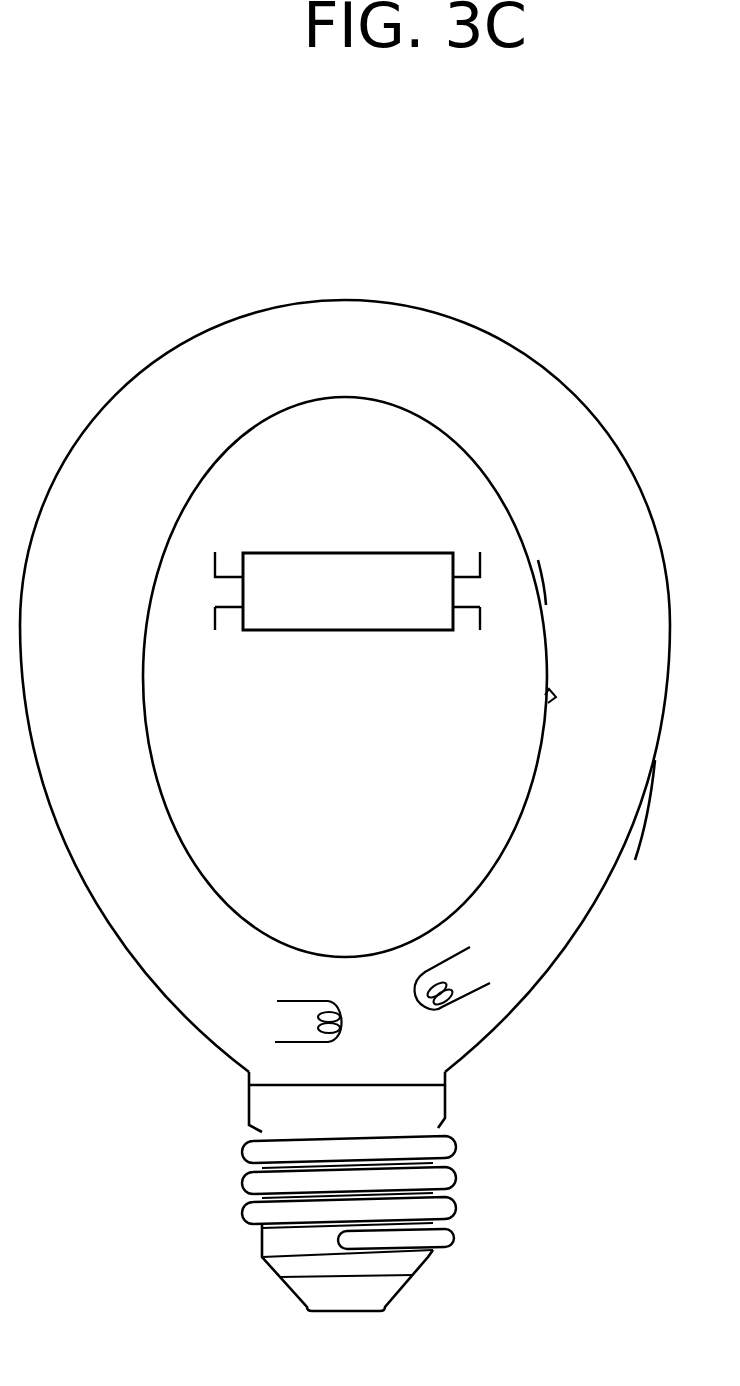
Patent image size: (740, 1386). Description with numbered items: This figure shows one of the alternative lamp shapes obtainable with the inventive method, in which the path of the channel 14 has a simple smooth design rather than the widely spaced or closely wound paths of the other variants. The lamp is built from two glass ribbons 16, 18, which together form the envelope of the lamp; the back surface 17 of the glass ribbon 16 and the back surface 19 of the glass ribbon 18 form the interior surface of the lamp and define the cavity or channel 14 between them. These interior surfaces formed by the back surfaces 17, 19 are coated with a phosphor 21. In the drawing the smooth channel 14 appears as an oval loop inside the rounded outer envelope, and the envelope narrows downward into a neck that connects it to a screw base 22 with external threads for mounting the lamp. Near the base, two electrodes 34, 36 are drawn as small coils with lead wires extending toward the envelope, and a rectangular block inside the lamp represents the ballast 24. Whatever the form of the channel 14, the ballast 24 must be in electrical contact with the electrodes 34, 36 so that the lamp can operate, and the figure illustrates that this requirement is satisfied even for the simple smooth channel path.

The channel 14 is at (562, 884).
The glass ribbon 16 is at (455, 446).
The back surface 17 is at (548, 703).
The glass ribbon 18 is at (532, 358).
The back surface 19 is at (648, 789).
The phosphor 21 is at (539, 590).
The screw base 22 is at (250, 1183).
The ballast 24 is at (362, 605).
The electrode 34 is at (488, 983).
The electrode 36 is at (289, 1041).